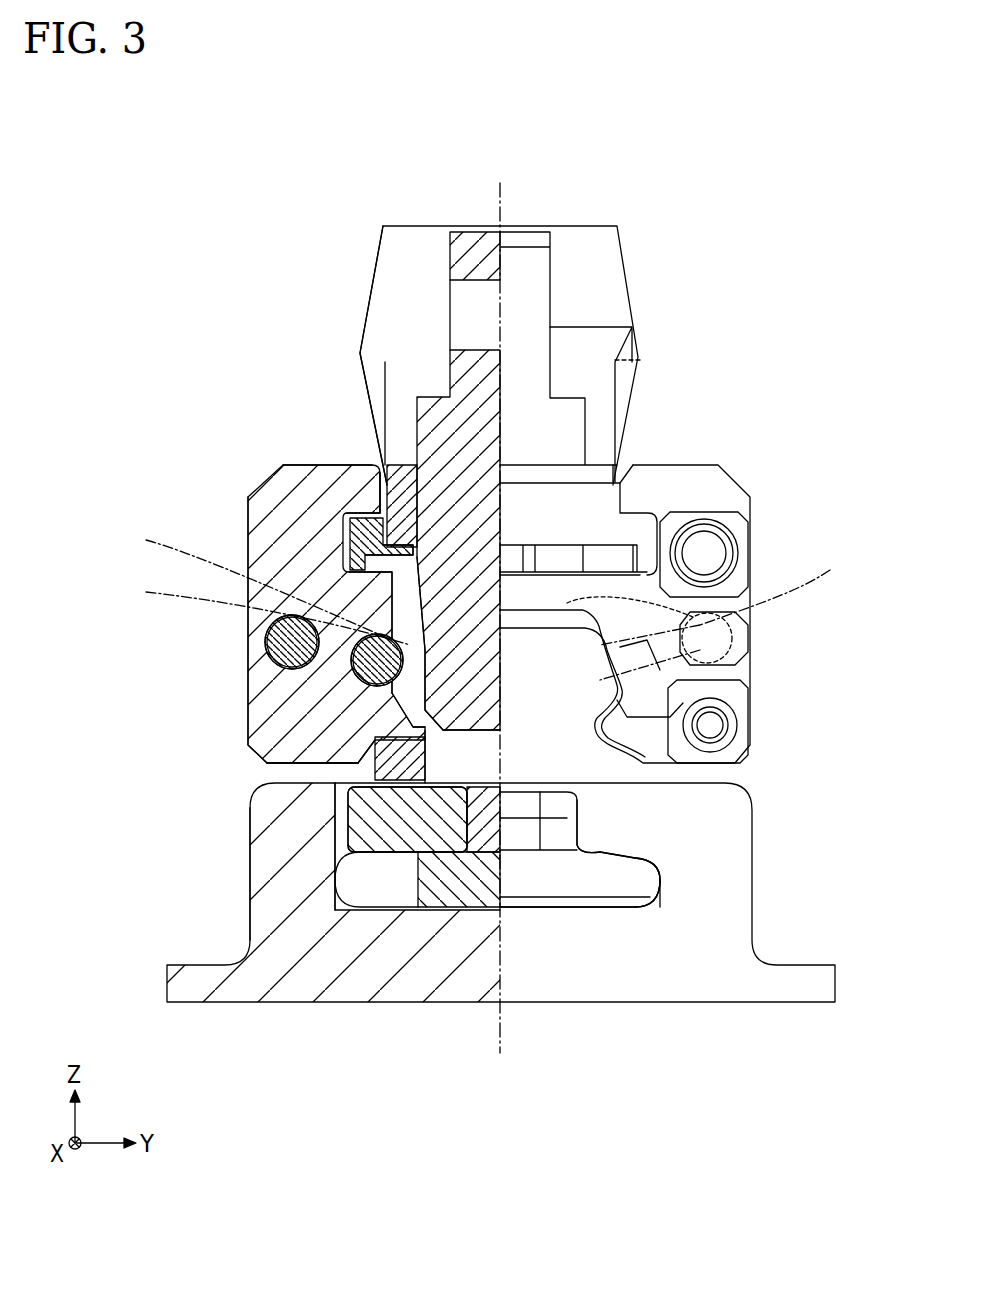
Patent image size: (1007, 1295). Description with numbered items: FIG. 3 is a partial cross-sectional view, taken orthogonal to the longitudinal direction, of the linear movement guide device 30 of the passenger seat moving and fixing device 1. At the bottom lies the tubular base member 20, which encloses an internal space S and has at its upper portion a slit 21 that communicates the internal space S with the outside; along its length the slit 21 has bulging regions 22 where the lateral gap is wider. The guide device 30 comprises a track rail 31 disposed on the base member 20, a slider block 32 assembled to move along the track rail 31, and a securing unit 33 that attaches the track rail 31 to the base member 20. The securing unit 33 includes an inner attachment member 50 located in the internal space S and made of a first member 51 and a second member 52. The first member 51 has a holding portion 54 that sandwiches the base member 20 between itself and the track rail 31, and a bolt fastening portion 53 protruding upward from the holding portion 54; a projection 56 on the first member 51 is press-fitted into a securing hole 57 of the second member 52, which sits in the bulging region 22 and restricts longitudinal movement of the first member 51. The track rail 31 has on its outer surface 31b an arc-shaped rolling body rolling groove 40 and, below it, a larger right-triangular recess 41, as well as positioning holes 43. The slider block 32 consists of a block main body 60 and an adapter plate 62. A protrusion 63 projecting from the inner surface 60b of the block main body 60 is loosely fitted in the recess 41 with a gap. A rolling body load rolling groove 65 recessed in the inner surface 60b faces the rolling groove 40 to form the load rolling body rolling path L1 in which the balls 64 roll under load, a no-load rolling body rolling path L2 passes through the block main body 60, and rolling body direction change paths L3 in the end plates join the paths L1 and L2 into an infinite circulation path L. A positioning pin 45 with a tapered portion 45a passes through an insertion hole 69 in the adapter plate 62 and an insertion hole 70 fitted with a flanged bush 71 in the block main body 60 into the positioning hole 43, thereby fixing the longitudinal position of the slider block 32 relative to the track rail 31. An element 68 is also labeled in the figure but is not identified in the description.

The passenger seat moving and fixing device 1 is at (150, 196).
The linear movement guide device 30 is at (272, 278).
The positioning pin 45 is at (475, 228).
The tapered portion 45a is at (452, 582).
The skirt portion 68 is at (365, 322).
The insertion hole 69 is at (398, 470).
The rolling body rolling groove 40 is at (388, 570).
The block main body 60 is at (248, 632).
The inner surface 60b is at (350, 540).
The adapter plate 62 is at (382, 468).
The rolling body load rolling groove 65 is at (390, 603).
The insertion hole 70 is at (368, 548).
The bush 71 is at (405, 552).
The balls 64 is at (352, 666).
The outer surface 31b is at (392, 710).
The protrusion 63 is at (373, 738).
The recess 41 is at (378, 740).
The positioning hole 43 is at (350, 767).
The projection 56 is at (490, 783).
The slider block 32 is at (738, 476).
The track rail 31 is at (735, 640).
The infinite circulation path L is at (110, 465).
The load rolling body rolling path L1 is at (247, 492).
The no-load rolling body rolling path L2 is at (262, 610).
The rolling body direction change path L3 is at (253, 580).
The slit 21 is at (735, 725).
The base member 20 is at (700, 787).
The bulging region 22 is at (343, 800).
The second member 52 is at (402, 832).
The inner attachment member 50 is at (545, 928).
The securing hole 57 is at (483, 832).
The holding portion 54 is at (338, 860).
The bolt fastening portion 53 is at (600, 812).
The first member 51 is at (622, 895).
The securing unit 33 is at (661, 880).
The internal space S is at (660, 905).